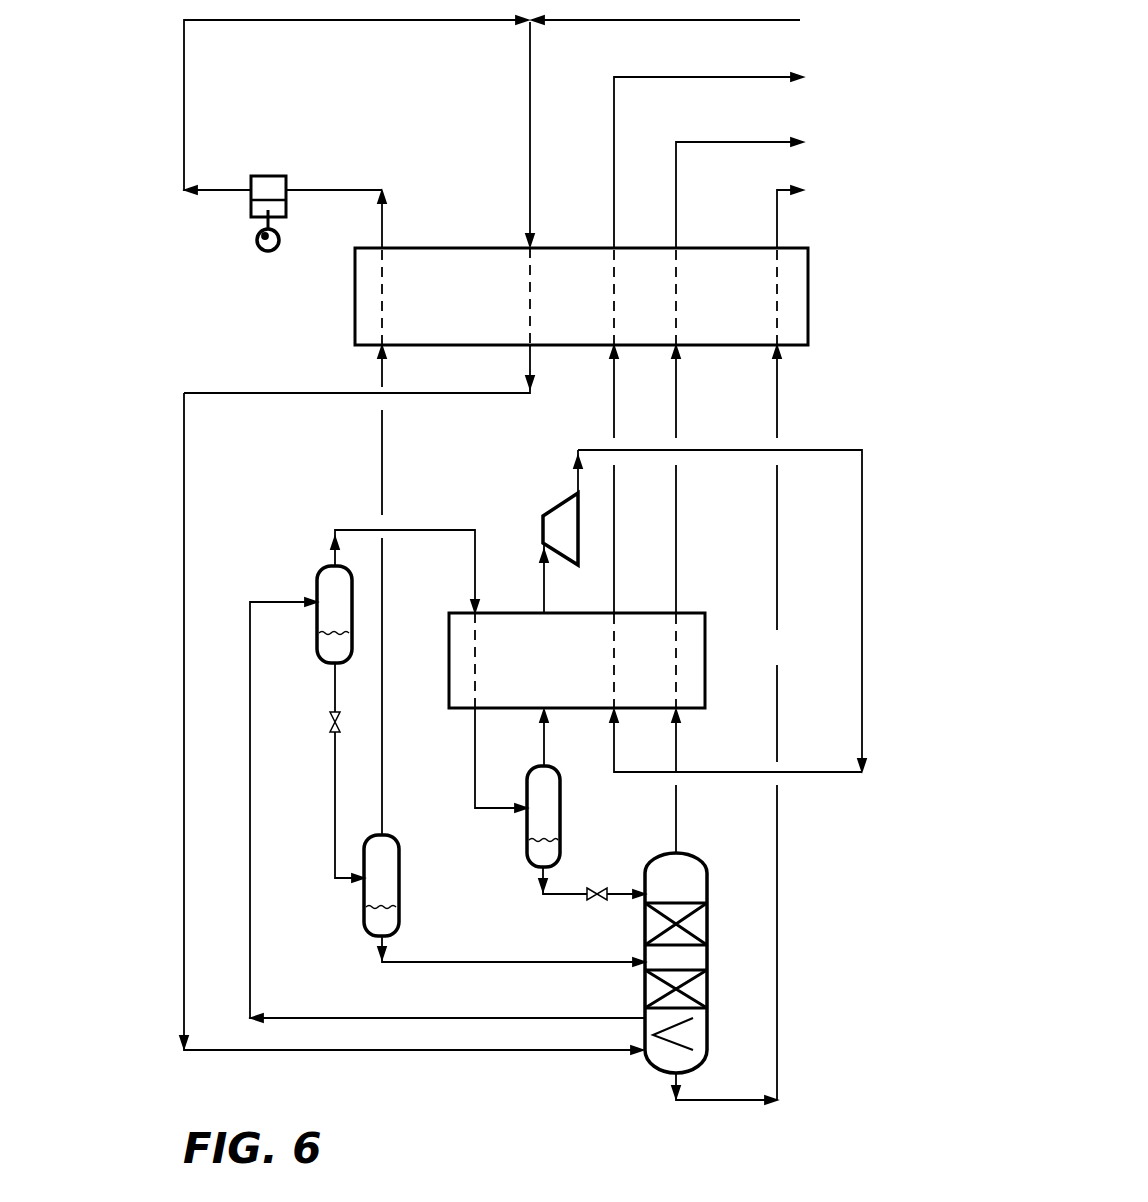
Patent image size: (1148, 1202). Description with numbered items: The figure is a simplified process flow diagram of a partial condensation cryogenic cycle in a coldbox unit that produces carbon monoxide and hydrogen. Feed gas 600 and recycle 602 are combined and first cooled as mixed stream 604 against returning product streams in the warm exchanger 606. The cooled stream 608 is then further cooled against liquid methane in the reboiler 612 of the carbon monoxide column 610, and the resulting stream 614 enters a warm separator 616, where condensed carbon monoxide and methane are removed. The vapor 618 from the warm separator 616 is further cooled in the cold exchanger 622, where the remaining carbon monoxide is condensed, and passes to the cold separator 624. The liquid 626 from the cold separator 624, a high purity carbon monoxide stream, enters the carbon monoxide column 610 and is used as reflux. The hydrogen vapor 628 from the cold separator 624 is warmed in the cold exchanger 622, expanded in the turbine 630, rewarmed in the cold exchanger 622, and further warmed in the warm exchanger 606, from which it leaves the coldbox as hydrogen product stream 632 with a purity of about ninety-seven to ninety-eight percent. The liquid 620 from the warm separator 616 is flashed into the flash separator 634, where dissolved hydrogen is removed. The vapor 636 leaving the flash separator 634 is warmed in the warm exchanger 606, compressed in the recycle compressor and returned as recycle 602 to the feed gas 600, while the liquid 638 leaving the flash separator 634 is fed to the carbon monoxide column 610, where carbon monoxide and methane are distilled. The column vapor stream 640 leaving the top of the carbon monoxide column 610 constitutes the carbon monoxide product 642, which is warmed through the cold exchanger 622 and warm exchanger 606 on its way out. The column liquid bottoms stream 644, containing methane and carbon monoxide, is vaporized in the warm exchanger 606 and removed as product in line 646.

The feed gas 600 is at (700, 22).
The recycle 602 is at (514, 22).
The mixed stream 604 is at (533, 52).
The warm exchanger 606 is at (470, 300).
The stream 608 is at (185, 781).
The carbon monoxide column 610 is at (643, 990).
The reboiler 612 is at (700, 1042).
The stream 614 is at (247, 888).
The warm separator 616 is at (316, 640).
The vapor 618 is at (369, 524).
The liquid 620 is at (332, 777).
The cold exchanger 622 is at (600, 663).
The cold separator 624 is at (524, 829).
The liquid 626 is at (565, 893).
The hydrogen vapor 628 is at (541, 742).
The turbine 630 is at (566, 565).
The stream 632 is at (700, 80).
The flash separator 634 is at (361, 898).
The vapor 636 is at (383, 779).
The liquid 638 is at (486, 968).
The column vapor stream 640 is at (679, 826).
The carbon monoxide product 642 is at (702, 145).
The column liquid bottoms stream 644 is at (782, 1002).
The line 646 is at (783, 221).